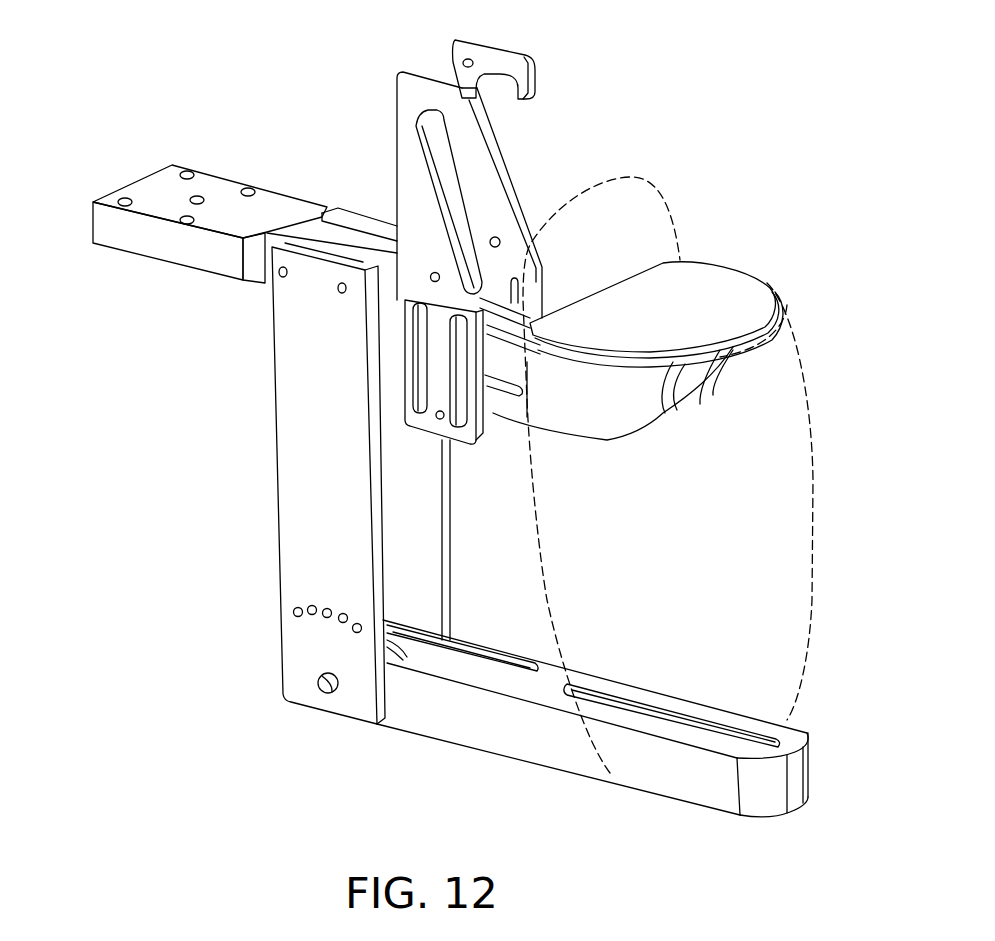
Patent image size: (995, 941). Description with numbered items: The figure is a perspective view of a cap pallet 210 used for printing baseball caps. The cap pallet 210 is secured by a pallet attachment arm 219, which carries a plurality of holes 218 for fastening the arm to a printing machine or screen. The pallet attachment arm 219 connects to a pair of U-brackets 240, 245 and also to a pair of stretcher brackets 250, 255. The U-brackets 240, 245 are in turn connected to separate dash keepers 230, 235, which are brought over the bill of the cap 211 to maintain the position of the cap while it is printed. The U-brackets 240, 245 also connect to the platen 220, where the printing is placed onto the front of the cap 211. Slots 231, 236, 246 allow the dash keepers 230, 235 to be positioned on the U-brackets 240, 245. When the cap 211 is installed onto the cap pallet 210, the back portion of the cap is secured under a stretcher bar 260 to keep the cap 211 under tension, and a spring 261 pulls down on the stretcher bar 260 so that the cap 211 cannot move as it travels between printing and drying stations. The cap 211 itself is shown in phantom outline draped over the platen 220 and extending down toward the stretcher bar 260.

The cap pallet 210 is at (693, 62).
The cap 211 is at (665, 200).
The holes 218 is at (243, 187).
The pallet attachment arm 219 is at (133, 180).
The platen 220 is at (747, 278).
The dash keeper 230 is at (500, 47).
The slot 231 is at (513, 280).
The dash keeper 235 is at (395, 87).
The slot 236 is at (407, 342).
The U-bracket 240 is at (723, 383).
The U-bracket 245 is at (633, 433).
The slot 246 is at (508, 393).
The stretcher bracket 250 is at (453, 512).
The stretcher bracket 255 is at (273, 482).
The stretcher bar 260 is at (503, 753).
The spring 261 is at (400, 647).